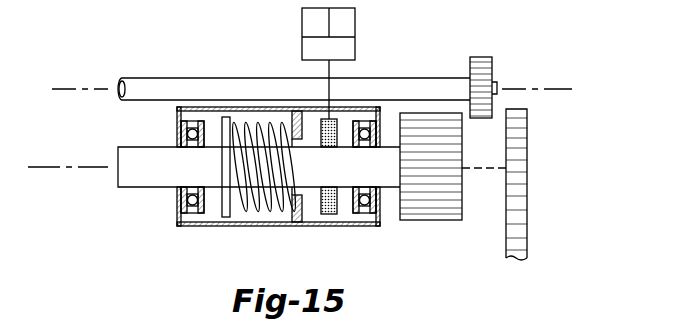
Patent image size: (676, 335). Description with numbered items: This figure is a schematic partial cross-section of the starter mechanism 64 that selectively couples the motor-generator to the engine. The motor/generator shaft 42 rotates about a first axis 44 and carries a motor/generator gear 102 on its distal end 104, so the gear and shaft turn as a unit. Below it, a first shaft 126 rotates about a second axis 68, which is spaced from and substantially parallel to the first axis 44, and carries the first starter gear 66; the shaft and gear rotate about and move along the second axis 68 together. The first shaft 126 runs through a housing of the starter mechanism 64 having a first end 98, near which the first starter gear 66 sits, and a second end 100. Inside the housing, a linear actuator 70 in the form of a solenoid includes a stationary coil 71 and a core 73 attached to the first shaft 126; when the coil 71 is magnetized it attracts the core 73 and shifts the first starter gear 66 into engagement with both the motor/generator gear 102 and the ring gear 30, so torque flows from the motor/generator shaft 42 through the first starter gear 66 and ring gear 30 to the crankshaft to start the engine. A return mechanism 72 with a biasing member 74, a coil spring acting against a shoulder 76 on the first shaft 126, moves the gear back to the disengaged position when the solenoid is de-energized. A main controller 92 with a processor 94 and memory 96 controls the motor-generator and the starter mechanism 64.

The ring gear 30 is at (527, 237).
The motor/generator shaft 42 is at (162, 86).
The first axis 44 is at (568, 88).
The starter mechanism 64 is at (195, 227).
The first starter gear 66 is at (433, 221).
The second axis 68 is at (486, 170).
The linear actuator 70 is at (349, 217).
The coil 71 is at (333, 216).
The return mechanism 72 is at (213, 120).
The core 73 is at (257, 166).
The biasing member 74 is at (255, 206).
The shoulder 76 is at (222, 117).
The main controller 92 is at (351, 63).
The processor 94 is at (315, 24).
The memory 96 is at (341, 24).
The first end 98 is at (379, 216).
The second end 100 is at (177, 218).
The motor/generator gear 102 is at (498, 86).
The distal end 104 is at (469, 77).
The first shaft 126 is at (128, 157).